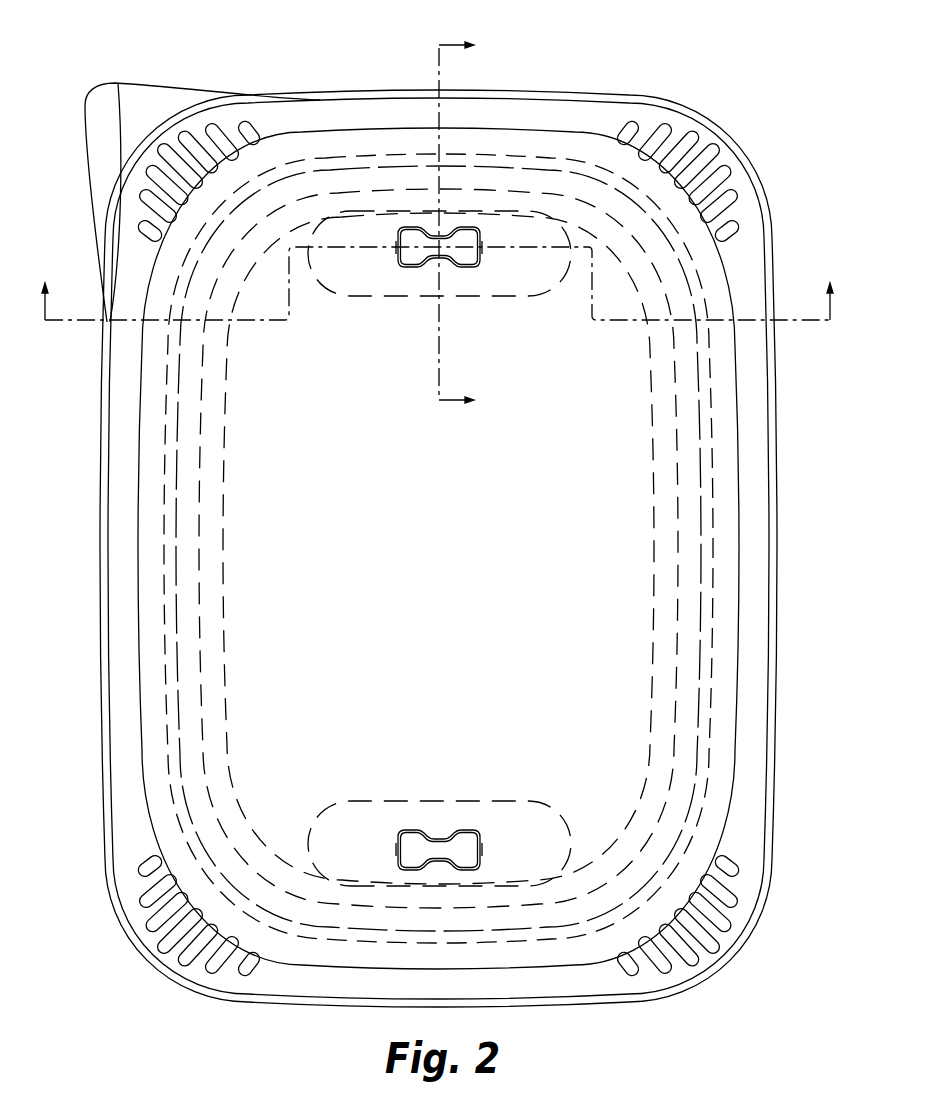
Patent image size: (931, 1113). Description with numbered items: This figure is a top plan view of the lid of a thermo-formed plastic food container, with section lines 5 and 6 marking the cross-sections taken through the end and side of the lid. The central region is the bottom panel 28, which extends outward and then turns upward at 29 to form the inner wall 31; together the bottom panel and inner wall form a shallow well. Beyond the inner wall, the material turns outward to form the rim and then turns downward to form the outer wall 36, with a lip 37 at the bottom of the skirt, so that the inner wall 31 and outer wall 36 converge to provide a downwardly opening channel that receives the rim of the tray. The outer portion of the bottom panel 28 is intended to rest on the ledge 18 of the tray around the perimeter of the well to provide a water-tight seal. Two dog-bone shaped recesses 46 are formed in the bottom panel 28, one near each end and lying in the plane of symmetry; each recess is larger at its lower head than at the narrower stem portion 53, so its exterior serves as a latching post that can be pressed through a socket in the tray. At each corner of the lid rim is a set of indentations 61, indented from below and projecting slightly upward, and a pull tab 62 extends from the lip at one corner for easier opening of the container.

The ledge 18 is at (173, 614).
The bottom panel 28 is at (487, 504).
The upward turn of bottom panel 29 is at (198, 432).
The inner wall 31 is at (545, 177).
The outer wall 36 is at (773, 460).
The lip 37 is at (777, 518).
The dog-bone shaped recess 46 is at (450, 218).
The narrow portion of lid recess 53 is at (432, 243).
The indentations 61 is at (733, 902).
The pull tab 62 is at (118, 105).
The section line 5- 5 is at (441, 226).
The section line 6- 6 is at (437, 305).